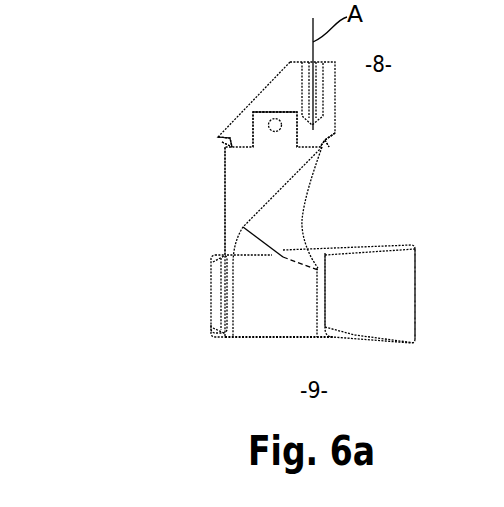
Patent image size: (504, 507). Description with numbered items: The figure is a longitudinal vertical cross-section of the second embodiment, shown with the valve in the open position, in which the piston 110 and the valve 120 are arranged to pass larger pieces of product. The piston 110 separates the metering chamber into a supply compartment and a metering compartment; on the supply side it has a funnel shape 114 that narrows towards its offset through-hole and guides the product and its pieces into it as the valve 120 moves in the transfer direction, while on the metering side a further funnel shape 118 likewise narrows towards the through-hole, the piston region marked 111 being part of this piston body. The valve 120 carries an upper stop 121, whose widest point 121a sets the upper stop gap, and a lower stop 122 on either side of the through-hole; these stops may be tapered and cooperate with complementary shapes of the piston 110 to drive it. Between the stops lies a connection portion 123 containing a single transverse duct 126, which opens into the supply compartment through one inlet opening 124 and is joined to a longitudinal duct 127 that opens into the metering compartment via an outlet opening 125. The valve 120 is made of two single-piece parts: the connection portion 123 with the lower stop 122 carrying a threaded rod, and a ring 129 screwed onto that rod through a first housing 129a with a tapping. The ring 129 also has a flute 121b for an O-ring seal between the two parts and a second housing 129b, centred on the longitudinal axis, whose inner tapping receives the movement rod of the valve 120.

The piston 110 is at (395, 262).
The tube end 111 is at (417, 330).
The funnel shape 114 is at (347, 250).
The funnel shape 118 is at (355, 334).
The valve 120 is at (222, 95).
The upper stop 121 is at (222, 134).
The widest point of the upper stop 121a is at (341, 131).
The flute 121b is at (214, 149).
The lower stop 122 is at (221, 334).
The connection portion 123 is at (242, 185).
The inlet opening 124 is at (308, 216).
The outlet opening 125 is at (254, 343).
The transverse duct 126 is at (284, 237).
The longitudinal duct 127 is at (260, 297).
The ring 129 is at (264, 100).
The first housing 129a is at (285, 113).
The second housing 129b is at (307, 66).